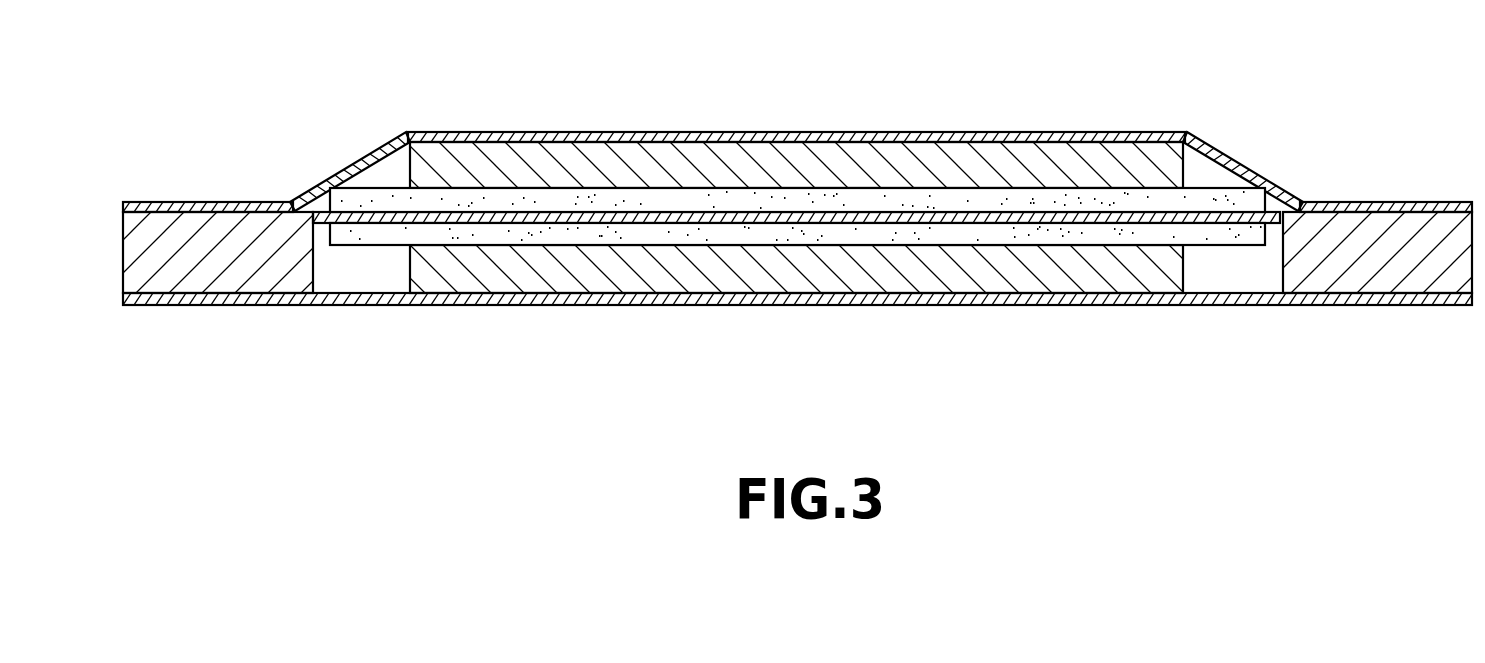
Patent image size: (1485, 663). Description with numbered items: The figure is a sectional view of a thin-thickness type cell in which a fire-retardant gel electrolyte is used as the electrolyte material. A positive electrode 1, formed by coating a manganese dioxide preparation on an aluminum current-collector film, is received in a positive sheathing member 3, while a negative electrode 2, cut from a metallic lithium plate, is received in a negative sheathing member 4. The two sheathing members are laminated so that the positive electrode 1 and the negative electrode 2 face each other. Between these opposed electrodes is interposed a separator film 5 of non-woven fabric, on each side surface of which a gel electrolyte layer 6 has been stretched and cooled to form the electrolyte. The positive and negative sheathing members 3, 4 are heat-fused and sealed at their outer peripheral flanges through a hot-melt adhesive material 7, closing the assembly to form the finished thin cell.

The positive electrode 1 is at (691, 148).
The negative electrode 2 is at (680, 286).
The positive sheathing member 3 is at (810, 136).
The negative sheathing member 4 is at (1010, 300).
The separator film 5 is at (906, 212).
The gel electrolyte layer 6 is at (1040, 228).
The hot-melt adhesive material 7 is at (215, 283).